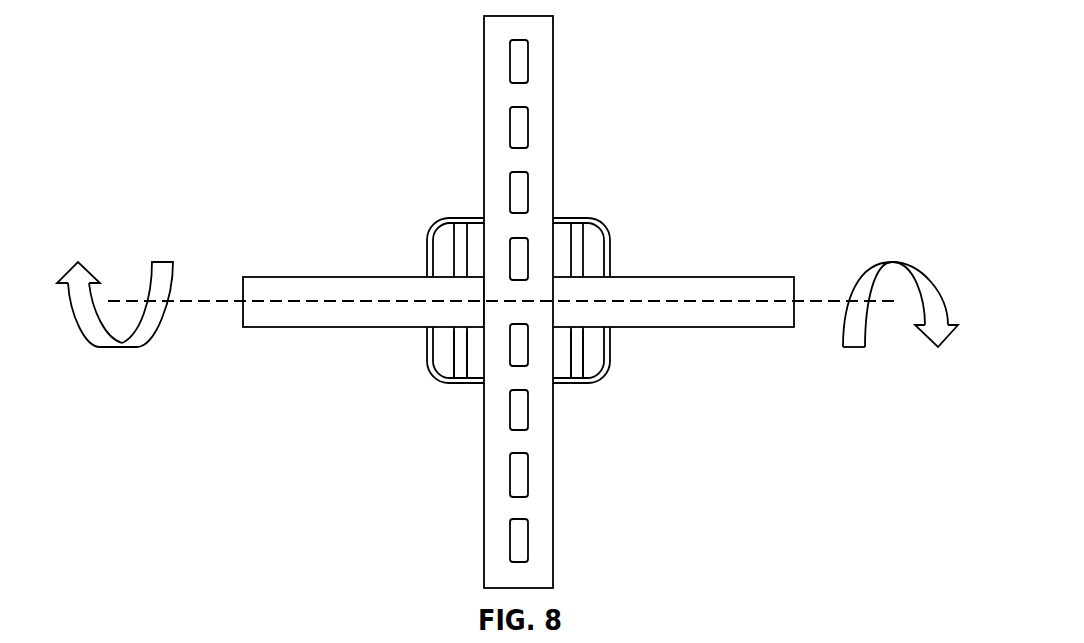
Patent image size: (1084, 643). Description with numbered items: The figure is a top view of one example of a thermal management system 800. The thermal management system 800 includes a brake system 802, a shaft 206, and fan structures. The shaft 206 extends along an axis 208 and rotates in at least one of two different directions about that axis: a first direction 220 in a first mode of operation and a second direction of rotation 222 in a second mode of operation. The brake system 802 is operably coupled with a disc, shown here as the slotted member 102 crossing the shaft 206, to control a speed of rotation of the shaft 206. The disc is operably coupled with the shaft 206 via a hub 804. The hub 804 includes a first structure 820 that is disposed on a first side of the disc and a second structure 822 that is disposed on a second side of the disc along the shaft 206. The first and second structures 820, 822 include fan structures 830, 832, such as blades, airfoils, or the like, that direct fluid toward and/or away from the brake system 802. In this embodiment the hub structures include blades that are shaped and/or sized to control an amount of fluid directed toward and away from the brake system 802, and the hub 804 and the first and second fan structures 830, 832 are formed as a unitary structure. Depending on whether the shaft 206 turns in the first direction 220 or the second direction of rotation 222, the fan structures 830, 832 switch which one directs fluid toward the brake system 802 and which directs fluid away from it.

The thermal management system 800 is at (243, 34).
The brake system 802 is at (435, 50).
The slotted blade 102 is at (538, 47).
The hub 804 is at (612, 230).
The first structure 820 is at (462, 218).
The second structure 822 is at (586, 218).
The fan structure 830 is at (458, 357).
The fan structure 832 is at (579, 357).
The shaft 206 is at (262, 277).
The axis 208 is at (820, 300).
The first direction 220 is at (117, 263).
The second direction of rotation 222 is at (890, 253).